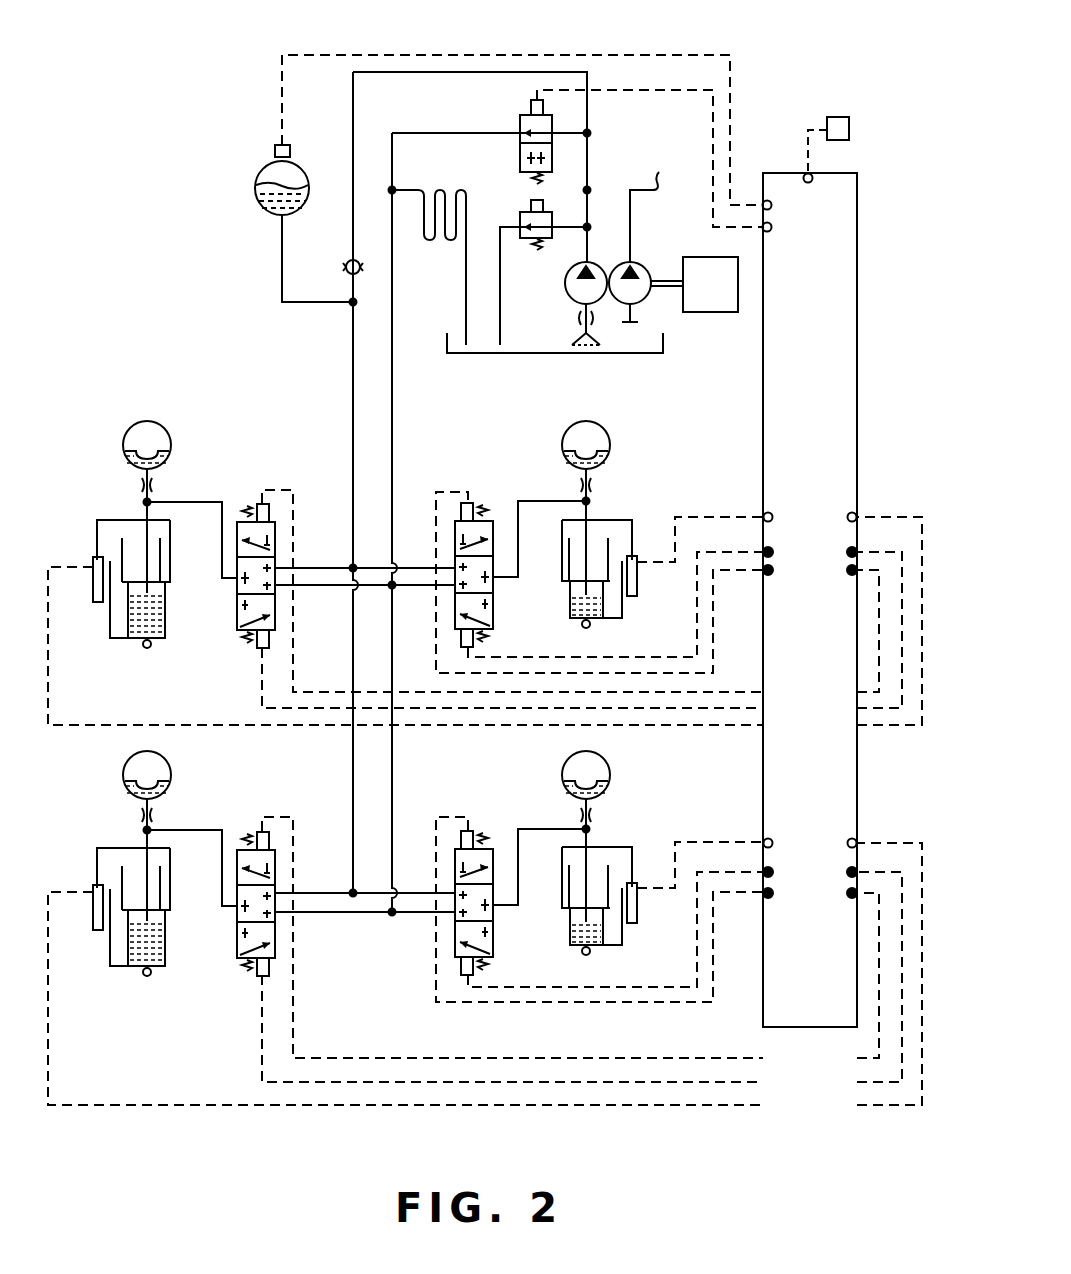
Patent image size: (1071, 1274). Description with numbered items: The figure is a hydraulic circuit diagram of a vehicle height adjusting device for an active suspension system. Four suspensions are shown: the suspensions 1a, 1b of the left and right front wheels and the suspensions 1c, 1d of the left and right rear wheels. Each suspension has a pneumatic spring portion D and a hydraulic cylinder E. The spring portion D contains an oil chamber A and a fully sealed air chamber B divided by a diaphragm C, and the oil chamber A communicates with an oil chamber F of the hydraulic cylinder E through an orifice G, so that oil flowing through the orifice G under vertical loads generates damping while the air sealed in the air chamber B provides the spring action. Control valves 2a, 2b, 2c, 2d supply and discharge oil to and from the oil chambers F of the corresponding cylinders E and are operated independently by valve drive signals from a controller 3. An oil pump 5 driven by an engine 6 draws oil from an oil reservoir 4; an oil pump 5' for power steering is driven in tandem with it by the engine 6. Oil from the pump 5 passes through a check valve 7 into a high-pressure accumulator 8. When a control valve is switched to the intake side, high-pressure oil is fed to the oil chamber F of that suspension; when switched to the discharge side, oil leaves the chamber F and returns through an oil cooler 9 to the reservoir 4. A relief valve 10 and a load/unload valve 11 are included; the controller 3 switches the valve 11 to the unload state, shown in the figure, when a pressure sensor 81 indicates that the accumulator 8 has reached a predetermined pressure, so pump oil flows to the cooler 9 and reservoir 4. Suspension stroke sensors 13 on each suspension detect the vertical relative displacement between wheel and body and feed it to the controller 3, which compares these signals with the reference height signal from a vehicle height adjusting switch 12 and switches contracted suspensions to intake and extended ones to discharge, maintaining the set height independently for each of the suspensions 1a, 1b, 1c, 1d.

The suspension of the left front wheel 1a is at (165, 600).
The suspension of the right front wheel 1b is at (562, 572).
The suspension of the left rear wheel 1c is at (165, 930).
The suspension of the right rear wheel 1d is at (562, 912).
The control valve 2a is at (280, 550).
The control valve 2b is at (448, 550).
The control valve 2c is at (280, 866).
The control valve 2d is at (450, 930).
The controller 3 is at (857, 348).
The oil reservoir 4 is at (510, 356).
The oil pump 5 is at (568, 303).
The oil pump for power steering 5' is at (646, 247).
The engine 6 is at (710, 313).
The check valve 7 is at (343, 270).
The high-pressure accumulator 8 is at (258, 208).
The pressure sensor 81 is at (275, 148).
The oil cooler 9 is at (446, 241).
The relief valve 10 is at (520, 215).
The load/unload valve 11 is at (520, 153).
The vehicle height adjusting switch 12 is at (836, 118).
The suspension stroke sensor 13 is at (92, 590).
The oil chamber A is at (171, 462).
The air chamber B is at (145, 430).
The diaphragm C is at (148, 455).
The pneumatic spring portion D is at (123, 434).
The hydraulic cylinder E is at (130, 618).
The oil chamber F is at (155, 625).
The orifice G is at (135, 486).